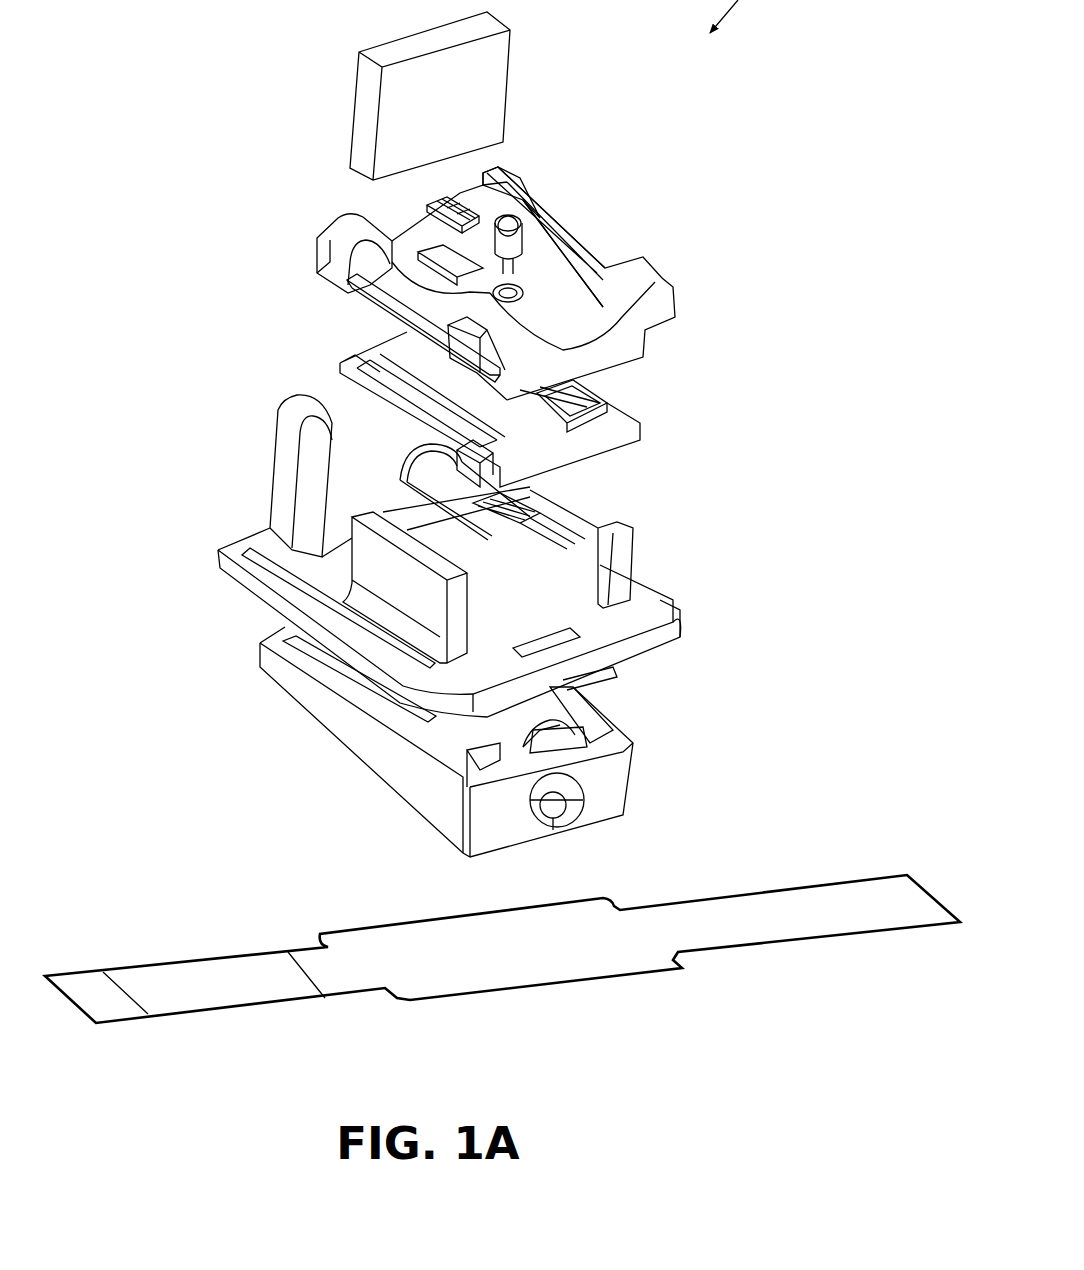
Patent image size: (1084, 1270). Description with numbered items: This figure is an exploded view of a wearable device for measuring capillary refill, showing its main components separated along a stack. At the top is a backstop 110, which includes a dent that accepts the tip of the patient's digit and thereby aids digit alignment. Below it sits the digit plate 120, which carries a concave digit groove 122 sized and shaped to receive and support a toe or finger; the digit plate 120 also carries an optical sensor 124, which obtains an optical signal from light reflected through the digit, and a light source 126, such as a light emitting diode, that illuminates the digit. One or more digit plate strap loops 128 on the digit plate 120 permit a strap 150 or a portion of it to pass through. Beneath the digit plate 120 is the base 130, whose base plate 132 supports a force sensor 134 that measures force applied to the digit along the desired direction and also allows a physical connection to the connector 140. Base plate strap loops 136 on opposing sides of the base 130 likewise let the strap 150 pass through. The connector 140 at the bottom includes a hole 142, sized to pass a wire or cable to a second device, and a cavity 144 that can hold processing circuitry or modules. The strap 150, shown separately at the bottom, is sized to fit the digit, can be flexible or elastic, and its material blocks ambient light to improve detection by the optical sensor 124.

The backstop 110 is at (330, 98).
The digit plate 120 is at (712, 290).
The digit groove 122 is at (561, 300).
The optical sensor 124 is at (437, 204).
The light source 126 is at (537, 197).
The digit plate strap loop 128 is at (407, 298).
The base 130 is at (200, 548).
The base plate 132 is at (673, 603).
The force sensor 134 is at (517, 495).
The base plate strap loop 136 is at (307, 600).
The connector 140 is at (328, 762).
The hole 142 is at (555, 800).
The cavity 144 is at (513, 725).
The strap 150 is at (655, 428).